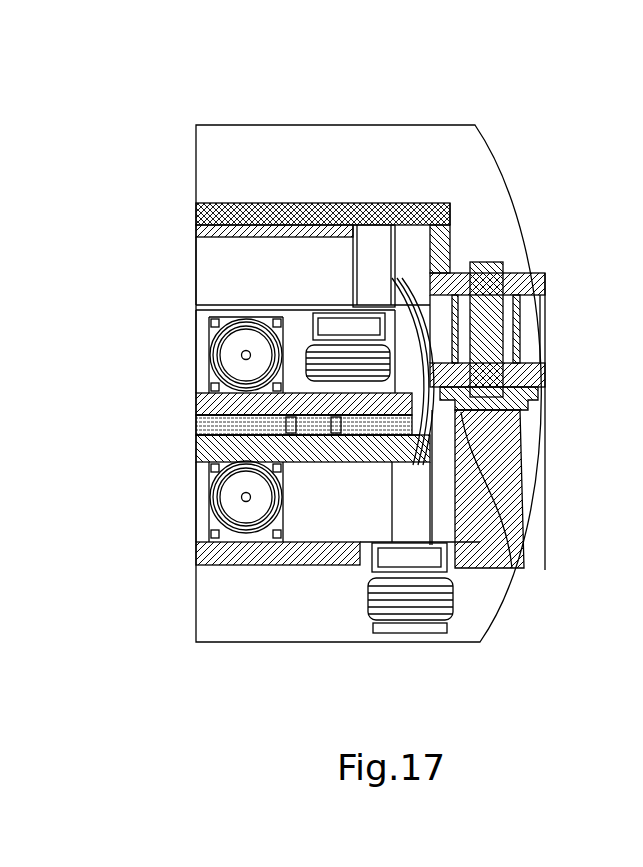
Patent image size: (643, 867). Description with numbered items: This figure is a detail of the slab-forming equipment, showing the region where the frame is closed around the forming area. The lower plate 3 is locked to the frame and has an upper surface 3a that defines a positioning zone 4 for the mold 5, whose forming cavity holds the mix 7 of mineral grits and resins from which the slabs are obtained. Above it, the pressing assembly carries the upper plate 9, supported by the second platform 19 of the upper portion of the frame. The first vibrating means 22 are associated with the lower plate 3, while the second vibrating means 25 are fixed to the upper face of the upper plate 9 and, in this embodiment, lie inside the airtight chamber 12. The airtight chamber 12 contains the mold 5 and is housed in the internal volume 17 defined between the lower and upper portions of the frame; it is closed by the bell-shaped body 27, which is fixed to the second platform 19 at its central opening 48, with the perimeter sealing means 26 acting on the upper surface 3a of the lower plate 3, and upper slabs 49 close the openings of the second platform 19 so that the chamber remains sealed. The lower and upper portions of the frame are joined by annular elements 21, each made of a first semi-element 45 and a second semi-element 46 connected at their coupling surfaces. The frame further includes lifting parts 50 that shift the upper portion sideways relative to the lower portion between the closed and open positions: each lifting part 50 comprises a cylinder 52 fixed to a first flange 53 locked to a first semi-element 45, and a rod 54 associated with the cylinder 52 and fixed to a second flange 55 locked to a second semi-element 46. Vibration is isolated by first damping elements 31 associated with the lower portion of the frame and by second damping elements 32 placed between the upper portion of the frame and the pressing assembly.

The annular elements 21 is at (312, 148).
The central opening 48 is at (386, 300).
The second damping elements 32 is at (396, 275).
The internal volume 17 is at (414, 245).
The second semi-element 46 is at (505, 212).
The airtight chamber 12 is at (406, 355).
The rod 54 is at (490, 322).
The second flange 55 is at (540, 368).
The first flange 53 is at (530, 398).
The cylinder 52 is at (517, 443).
The first semi-element 45 is at (533, 470).
The lifting parts 50 is at (528, 518).
The bell-shaped body 27 is at (523, 562).
The perimeter sealing means 26 is at (414, 438).
The first damping elements 31 is at (446, 600).
The positioning zone 4 is at (335, 432).
The upper surface 3a is at (290, 432).
The first vibrating means 22 is at (210, 521).
The lower plate 3 is at (211, 499).
The mold 5 is at (193, 437).
The mix 7 is at (206, 430).
The upper plate 9 is at (206, 404).
The second vibrating means 25 is at (206, 352).
The second platform 19 is at (196, 268).
The upper slabs 49 is at (206, 234).